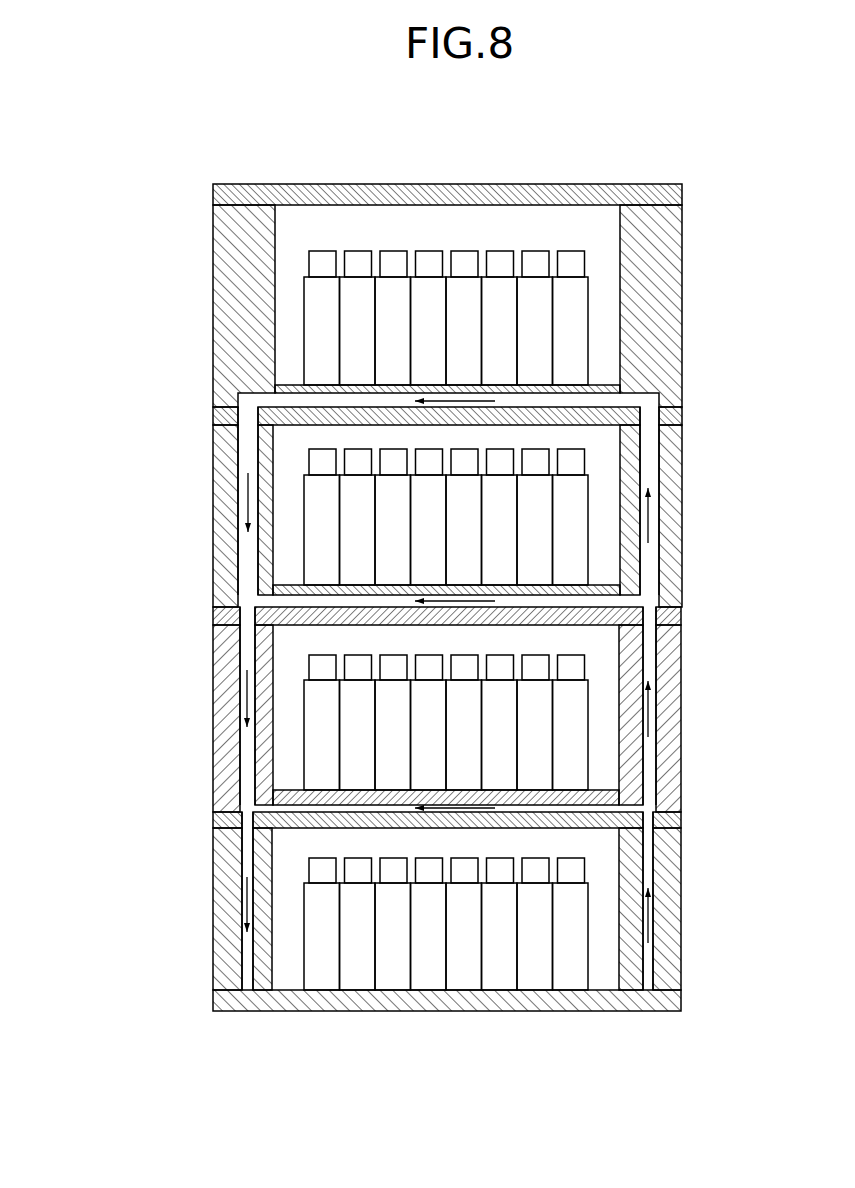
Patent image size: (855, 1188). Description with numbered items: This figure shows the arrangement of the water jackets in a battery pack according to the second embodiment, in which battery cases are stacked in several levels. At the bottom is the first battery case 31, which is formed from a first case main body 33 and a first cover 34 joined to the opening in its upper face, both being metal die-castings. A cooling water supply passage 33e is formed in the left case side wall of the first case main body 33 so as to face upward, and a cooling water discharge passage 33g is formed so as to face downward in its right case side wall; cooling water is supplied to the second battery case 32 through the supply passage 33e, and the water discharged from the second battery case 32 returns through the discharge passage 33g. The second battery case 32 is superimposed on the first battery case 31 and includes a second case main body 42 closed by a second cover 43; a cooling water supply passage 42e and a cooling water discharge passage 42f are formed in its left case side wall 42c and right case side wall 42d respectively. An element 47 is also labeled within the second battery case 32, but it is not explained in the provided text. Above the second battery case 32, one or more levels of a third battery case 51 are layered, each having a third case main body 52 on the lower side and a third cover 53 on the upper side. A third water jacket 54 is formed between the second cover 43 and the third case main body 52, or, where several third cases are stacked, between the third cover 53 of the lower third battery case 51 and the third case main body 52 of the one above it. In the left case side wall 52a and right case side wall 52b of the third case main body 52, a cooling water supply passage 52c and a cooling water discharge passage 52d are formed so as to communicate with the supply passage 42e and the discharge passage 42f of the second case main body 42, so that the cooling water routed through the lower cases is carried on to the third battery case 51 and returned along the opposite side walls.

The third battery case 51 is at (412, 396).
The third cover 53 is at (212, 201).
The third case main body 52 is at (434, 406).
The left case side wall 52a is at (670, 545).
The right case side wall 52b is at (218, 566).
The cooling water supply passage 52c is at (648, 571).
The cooling water discharge passage 52d is at (243, 581).
The third water jacket 54 is at (390, 398).
The second battery case 32 is at (406, 715).
The second cover 43 is at (212, 620).
The second case main body 42 is at (429, 715).
The left case side wall 42c is at (670, 703).
The right case side wall 42d is at (220, 770).
The cooling water supply passage 42e is at (648, 770).
The cooling water discharge passage 42f is at (247, 784).
The battery cells 47 is at (388, 803).
The first battery case 31 is at (406, 911).
The first cover 34 is at (212, 825).
The first case main body 33 is at (428, 911).
The cooling water supply passage 33e is at (647, 952).
The cooling water discharge passage 33g is at (247, 975).